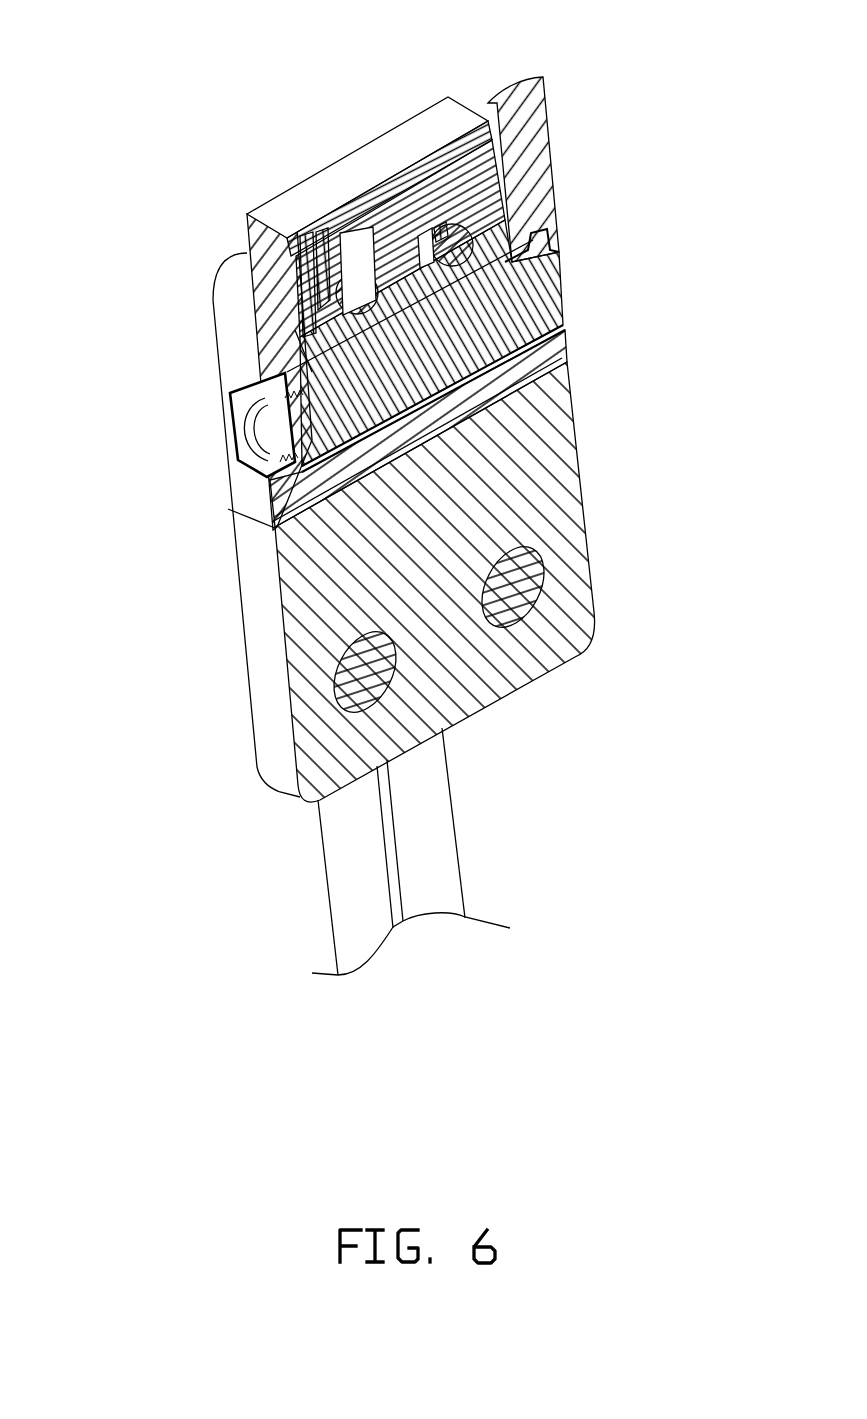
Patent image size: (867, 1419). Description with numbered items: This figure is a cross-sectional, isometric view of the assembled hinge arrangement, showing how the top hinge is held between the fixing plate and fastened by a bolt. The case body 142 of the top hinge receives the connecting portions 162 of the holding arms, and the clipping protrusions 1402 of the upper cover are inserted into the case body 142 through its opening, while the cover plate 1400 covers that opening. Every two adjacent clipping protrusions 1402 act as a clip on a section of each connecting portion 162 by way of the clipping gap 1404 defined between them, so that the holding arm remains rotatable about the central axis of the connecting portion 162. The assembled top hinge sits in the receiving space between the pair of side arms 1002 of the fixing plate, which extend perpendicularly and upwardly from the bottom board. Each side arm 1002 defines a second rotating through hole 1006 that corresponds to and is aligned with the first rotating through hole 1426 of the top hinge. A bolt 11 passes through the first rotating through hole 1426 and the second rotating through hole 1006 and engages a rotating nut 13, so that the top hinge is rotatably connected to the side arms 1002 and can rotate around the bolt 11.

The cover plate 1400 is at (417, 133).
The clipping protrusions 1402 is at (397, 257).
The clipping gap 1404 is at (327, 247).
The connecting portion 162 is at (520, 190).
The case body 142 is at (483, 242).
The bolt 11 is at (505, 265).
The side arms 1002 is at (267, 280).
The first rotating through hole 1426 is at (305, 350).
The rotating nut 13 is at (237, 408).
The second rotating through hole 1006 is at (300, 490).